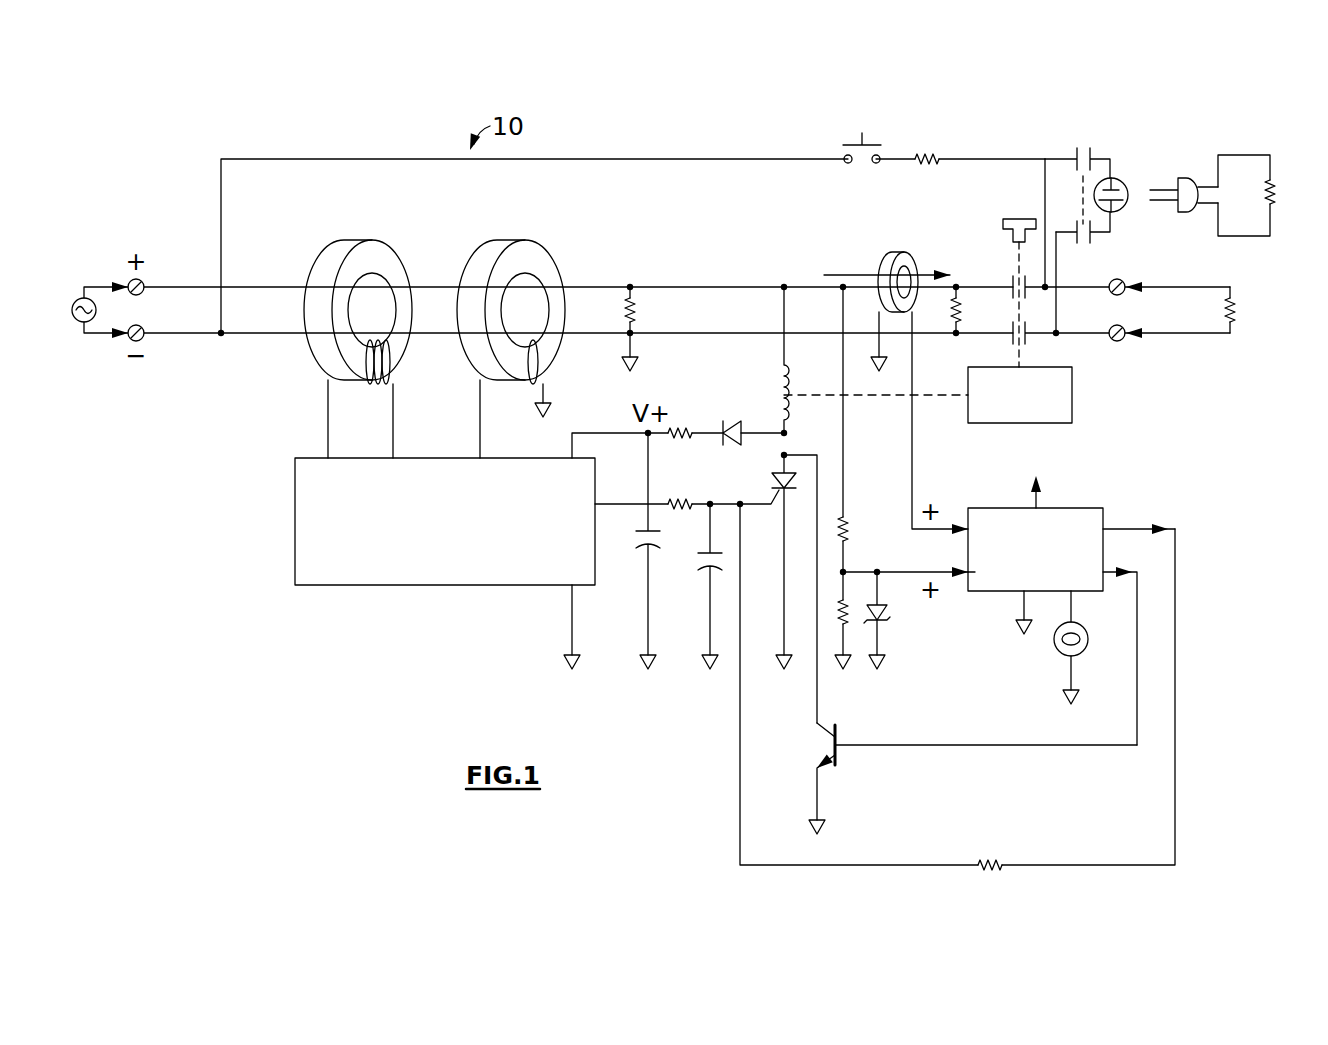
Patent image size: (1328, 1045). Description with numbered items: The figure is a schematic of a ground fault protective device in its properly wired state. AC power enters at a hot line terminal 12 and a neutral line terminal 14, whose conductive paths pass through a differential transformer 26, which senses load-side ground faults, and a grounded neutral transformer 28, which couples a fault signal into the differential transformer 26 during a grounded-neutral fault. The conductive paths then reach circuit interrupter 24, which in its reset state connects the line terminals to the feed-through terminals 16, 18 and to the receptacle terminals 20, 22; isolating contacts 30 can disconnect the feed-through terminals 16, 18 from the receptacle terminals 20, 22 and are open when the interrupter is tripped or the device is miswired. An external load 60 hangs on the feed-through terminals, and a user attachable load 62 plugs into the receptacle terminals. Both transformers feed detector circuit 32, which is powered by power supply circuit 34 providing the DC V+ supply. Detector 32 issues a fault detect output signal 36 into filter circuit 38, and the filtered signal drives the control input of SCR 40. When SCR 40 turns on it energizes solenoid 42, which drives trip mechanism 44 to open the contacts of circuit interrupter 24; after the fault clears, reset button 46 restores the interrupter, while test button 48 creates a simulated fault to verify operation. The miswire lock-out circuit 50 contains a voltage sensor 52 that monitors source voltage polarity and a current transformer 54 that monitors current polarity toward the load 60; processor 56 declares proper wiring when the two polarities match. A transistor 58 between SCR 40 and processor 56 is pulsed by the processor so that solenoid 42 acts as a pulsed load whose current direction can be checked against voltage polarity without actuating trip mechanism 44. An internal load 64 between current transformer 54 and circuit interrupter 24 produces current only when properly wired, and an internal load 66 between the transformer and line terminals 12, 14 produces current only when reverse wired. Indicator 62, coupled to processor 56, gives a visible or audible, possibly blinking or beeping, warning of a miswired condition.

The hot line terminal 12 is at (144, 283).
The neutral line terminal 14 is at (144, 341).
The feed-through terminal 16 is at (1125, 282).
The feed-through terminal 18 is at (1125, 342).
The receptacle terminal 20 is at (1120, 182).
The receptacle terminal 22 is at (1122, 208).
The circuit interrupter 24 is at (1008, 298).
The differential transformer 26 is at (378, 256).
The grounded neutral transformer 28 is at (529, 256).
The isolating contacts 30 is at (1090, 154).
The detector circuit 32 is at (300, 514).
The power supply circuit 34 is at (678, 425).
The fault detect output signal 36 is at (598, 502).
The filter circuit 38 is at (696, 566).
The SCR 40 is at (770, 480).
The solenoid 42 is at (778, 382).
The trip mechanism 44 is at (1074, 412).
The reset button 46 is at (1003, 222).
The test button 48 is at (840, 152).
The miswire lock-out circuit 50 is at (1095, 492).
The voltage sensor 52 is at (853, 554).
The current transformer 54 is at (890, 260).
The processor 56 is at (996, 578).
The transistor 58 is at (838, 736).
The load 60 is at (1236, 308).
The indicator 62 is at (1078, 628).
The internal load 64 is at (960, 312).
The internal load 66 is at (634, 312).